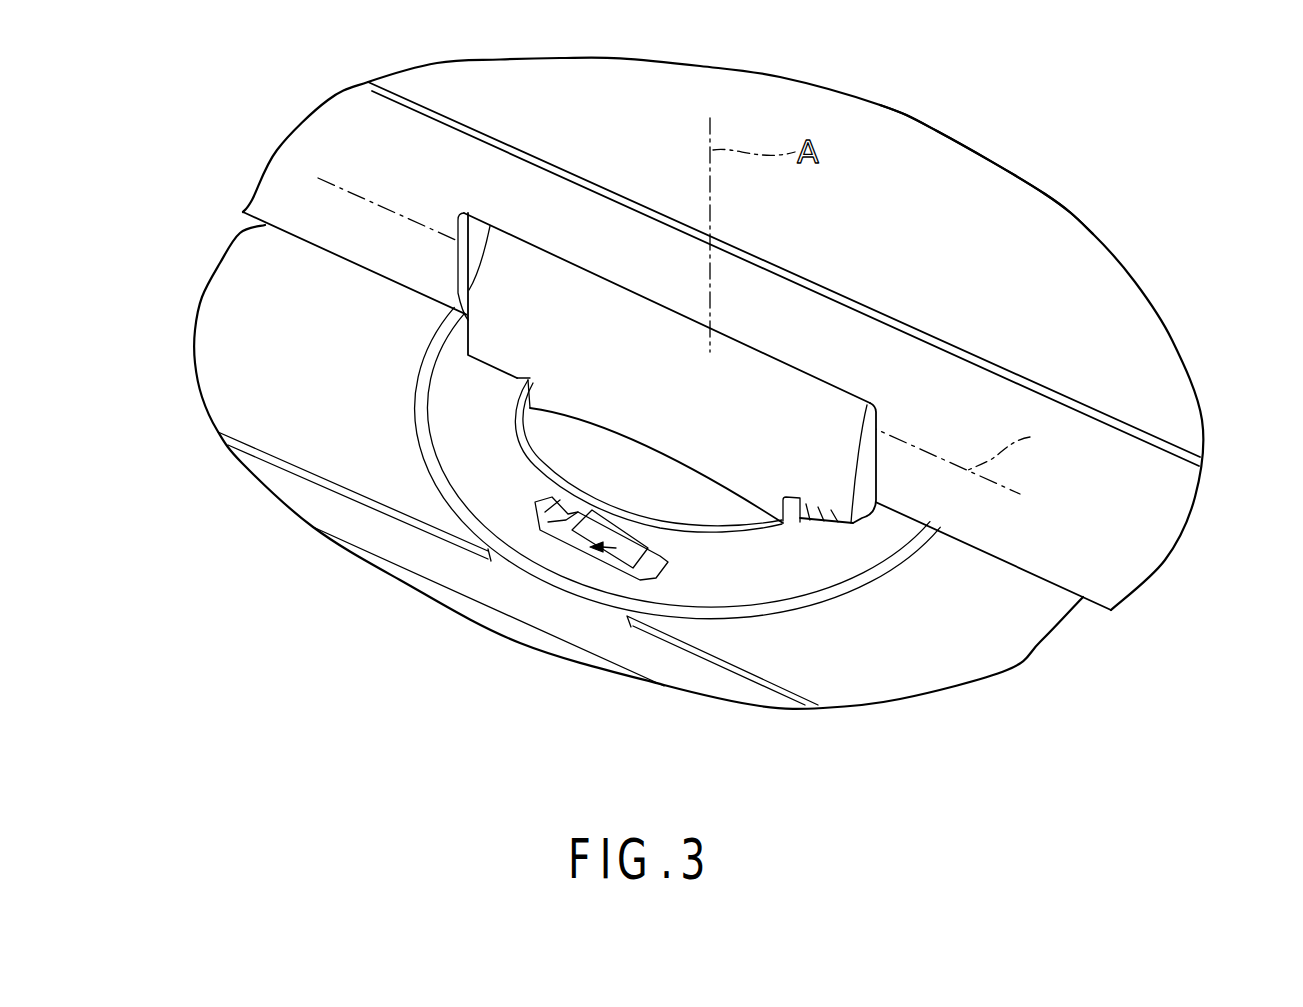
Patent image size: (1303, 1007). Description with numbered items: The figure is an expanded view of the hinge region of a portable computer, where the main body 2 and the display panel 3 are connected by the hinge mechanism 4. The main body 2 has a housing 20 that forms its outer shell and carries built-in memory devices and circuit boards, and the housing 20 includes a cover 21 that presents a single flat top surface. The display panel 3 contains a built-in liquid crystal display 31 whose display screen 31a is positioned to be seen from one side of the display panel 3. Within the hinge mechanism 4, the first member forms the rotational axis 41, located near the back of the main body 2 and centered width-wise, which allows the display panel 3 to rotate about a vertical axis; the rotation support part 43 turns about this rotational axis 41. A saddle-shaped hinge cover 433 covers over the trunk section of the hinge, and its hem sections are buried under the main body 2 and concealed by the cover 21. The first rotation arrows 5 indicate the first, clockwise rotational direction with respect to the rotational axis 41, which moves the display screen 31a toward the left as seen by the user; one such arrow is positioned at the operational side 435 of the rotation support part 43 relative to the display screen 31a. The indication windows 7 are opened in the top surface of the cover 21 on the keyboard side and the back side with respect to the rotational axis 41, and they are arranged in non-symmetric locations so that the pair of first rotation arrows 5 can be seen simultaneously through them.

The main body 2 is at (232, 325).
The display panel 3 is at (1207, 497).
The hinge mechanism 4 is at (621, 395).
The first rotation arrows 5 is at (620, 535).
The indication windows 7 is at (535, 508).
The housing 20 is at (1007, 672).
The cover 21 is at (848, 575).
The liquid crystal display 31 is at (940, 130).
The display screen 31a is at (1046, 190).
The rotational axis 41 is at (503, 420).
The rotation support part 43 is at (794, 523).
The hinge cover 433 is at (541, 262).
The operational side 435 is at (640, 410).